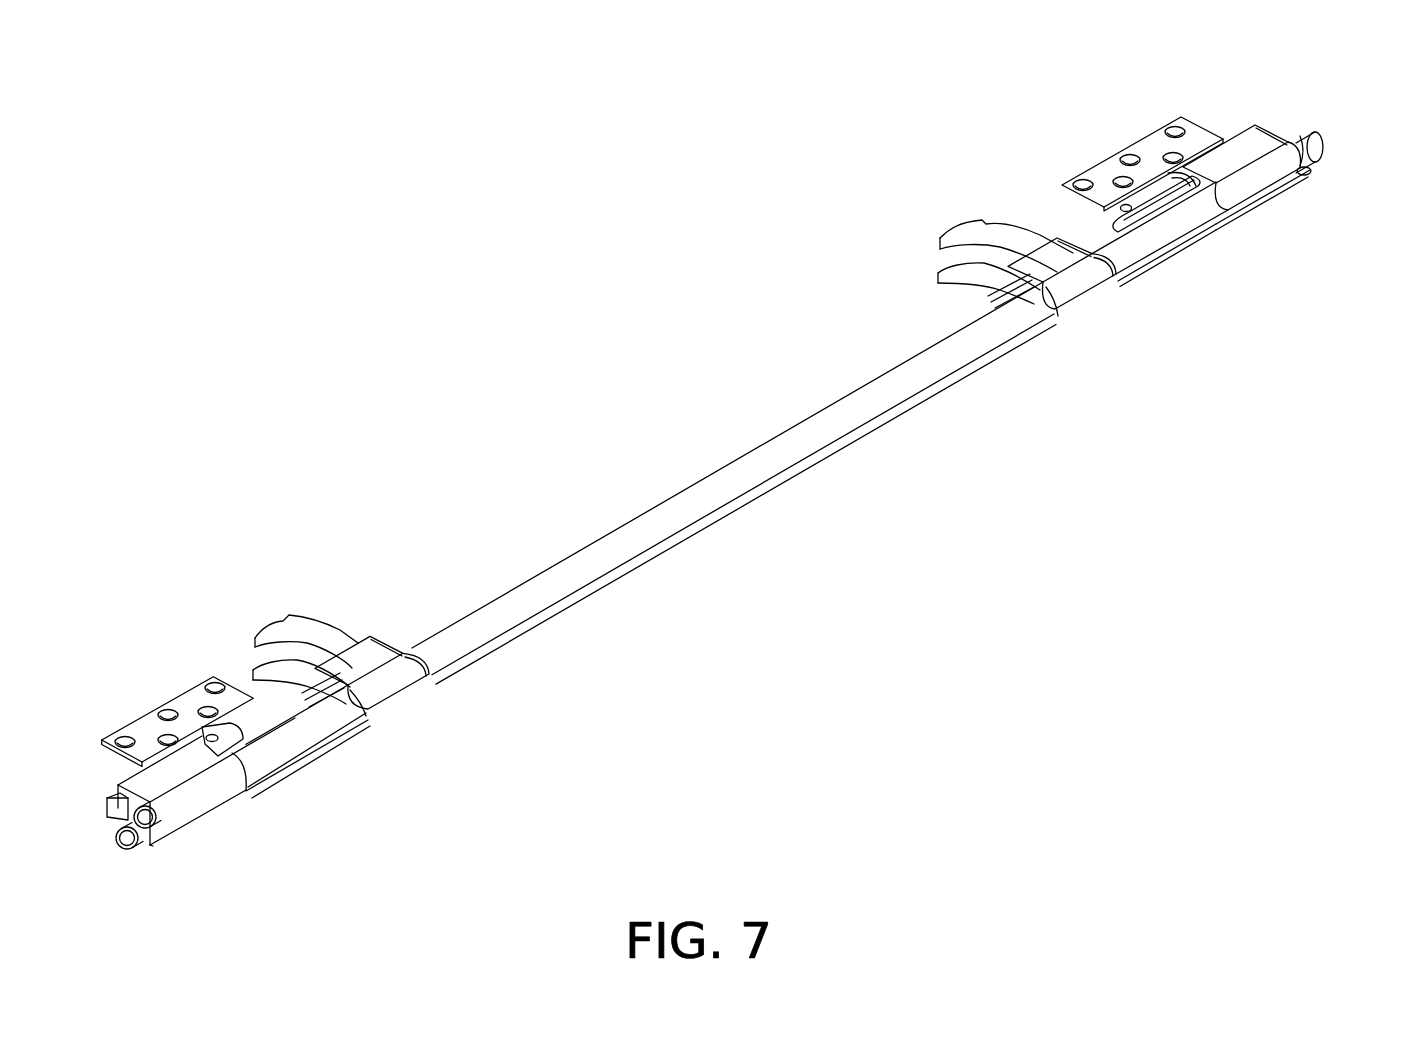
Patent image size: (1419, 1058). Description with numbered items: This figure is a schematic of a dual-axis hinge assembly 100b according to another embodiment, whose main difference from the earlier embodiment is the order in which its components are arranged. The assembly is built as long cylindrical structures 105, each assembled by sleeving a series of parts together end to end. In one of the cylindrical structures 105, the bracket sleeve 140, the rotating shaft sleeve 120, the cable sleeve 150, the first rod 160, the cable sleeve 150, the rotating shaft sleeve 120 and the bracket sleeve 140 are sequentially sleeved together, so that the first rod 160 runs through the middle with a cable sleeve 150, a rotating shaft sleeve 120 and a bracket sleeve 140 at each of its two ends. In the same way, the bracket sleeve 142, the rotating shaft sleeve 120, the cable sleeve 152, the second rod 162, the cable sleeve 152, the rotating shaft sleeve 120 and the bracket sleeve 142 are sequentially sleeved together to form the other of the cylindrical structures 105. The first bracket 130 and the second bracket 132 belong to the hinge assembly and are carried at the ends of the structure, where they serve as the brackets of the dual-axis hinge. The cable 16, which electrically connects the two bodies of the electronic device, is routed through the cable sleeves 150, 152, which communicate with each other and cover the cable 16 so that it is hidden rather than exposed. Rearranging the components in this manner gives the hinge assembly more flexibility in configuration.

The dual-axis hinge assembly 100b is at (205, 191).
The cable 16 is at (265, 665).
The cylindrical structure 105 is at (1318, 175).
The rotating shaft sleeve 120 is at (302, 742).
The first bracket 130 is at (146, 718).
The second bracket 132 is at (122, 770).
The bracket sleeve 140 is at (199, 796).
The bracket sleeve 142 is at (182, 826).
The cable sleeve 150 is at (417, 680).
The cable sleeve 152 is at (377, 707).
The first rod 160 is at (704, 501).
The second rod 162 is at (690, 530).